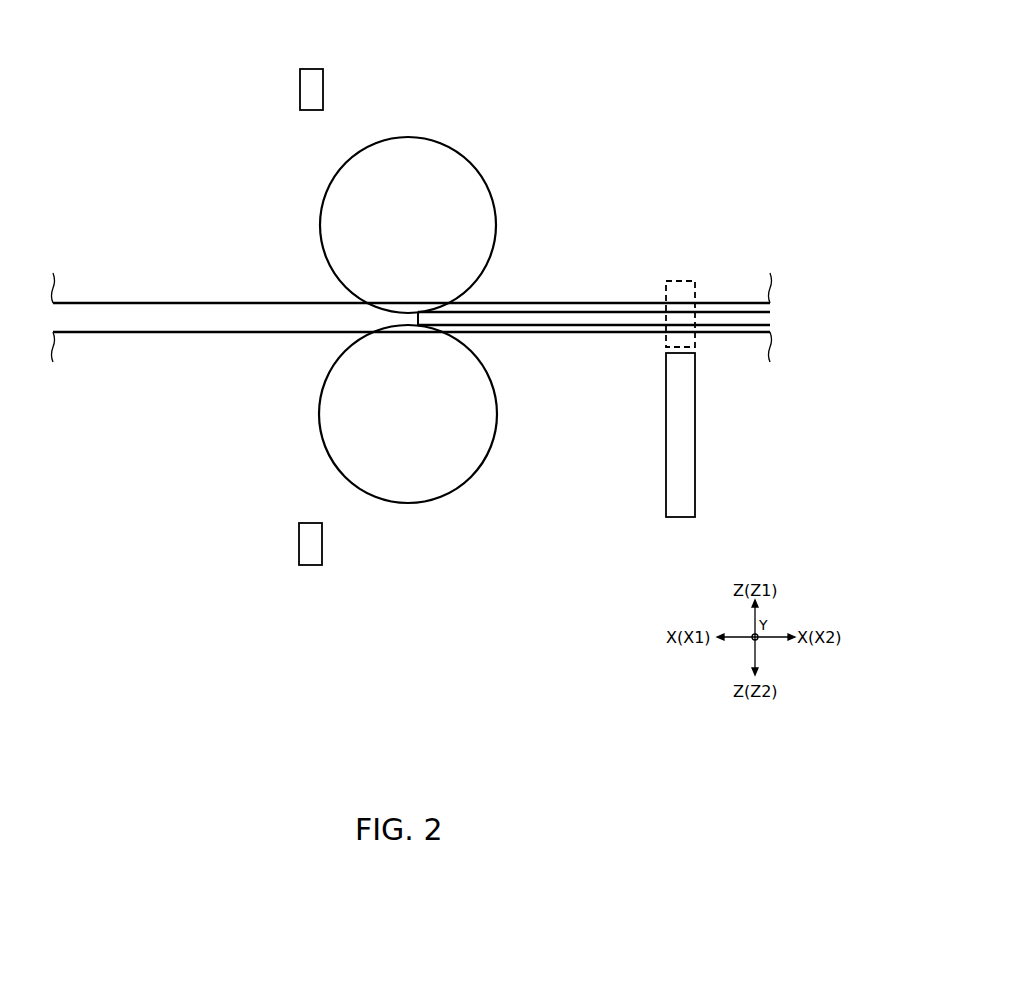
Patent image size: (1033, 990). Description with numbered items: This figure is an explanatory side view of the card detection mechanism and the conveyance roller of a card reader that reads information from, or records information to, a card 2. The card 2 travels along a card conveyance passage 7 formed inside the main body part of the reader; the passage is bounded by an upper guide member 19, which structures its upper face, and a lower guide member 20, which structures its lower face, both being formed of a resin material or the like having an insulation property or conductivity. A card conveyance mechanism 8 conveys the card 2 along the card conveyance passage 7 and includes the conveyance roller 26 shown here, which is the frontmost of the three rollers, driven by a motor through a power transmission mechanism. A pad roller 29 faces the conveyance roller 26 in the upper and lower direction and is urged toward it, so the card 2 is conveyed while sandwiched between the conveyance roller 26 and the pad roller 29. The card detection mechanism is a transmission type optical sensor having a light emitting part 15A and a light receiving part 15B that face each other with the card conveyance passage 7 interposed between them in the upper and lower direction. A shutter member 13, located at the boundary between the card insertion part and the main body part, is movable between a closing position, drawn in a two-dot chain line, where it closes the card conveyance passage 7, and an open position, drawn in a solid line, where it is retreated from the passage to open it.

The card 2 is at (581, 312).
The card conveyance passage 7 is at (200, 320).
The card conveyance mechanism 8 is at (492, 126).
The shutter member 13 is at (683, 281).
The light emitting part 15A is at (323, 92).
The light receiving part 15B is at (322, 545).
The upper guide member 19 is at (92, 298).
The lower guide member 20 is at (122, 334).
The conveyance roller 26 is at (320, 226).
The pad roller 29 is at (319, 420).